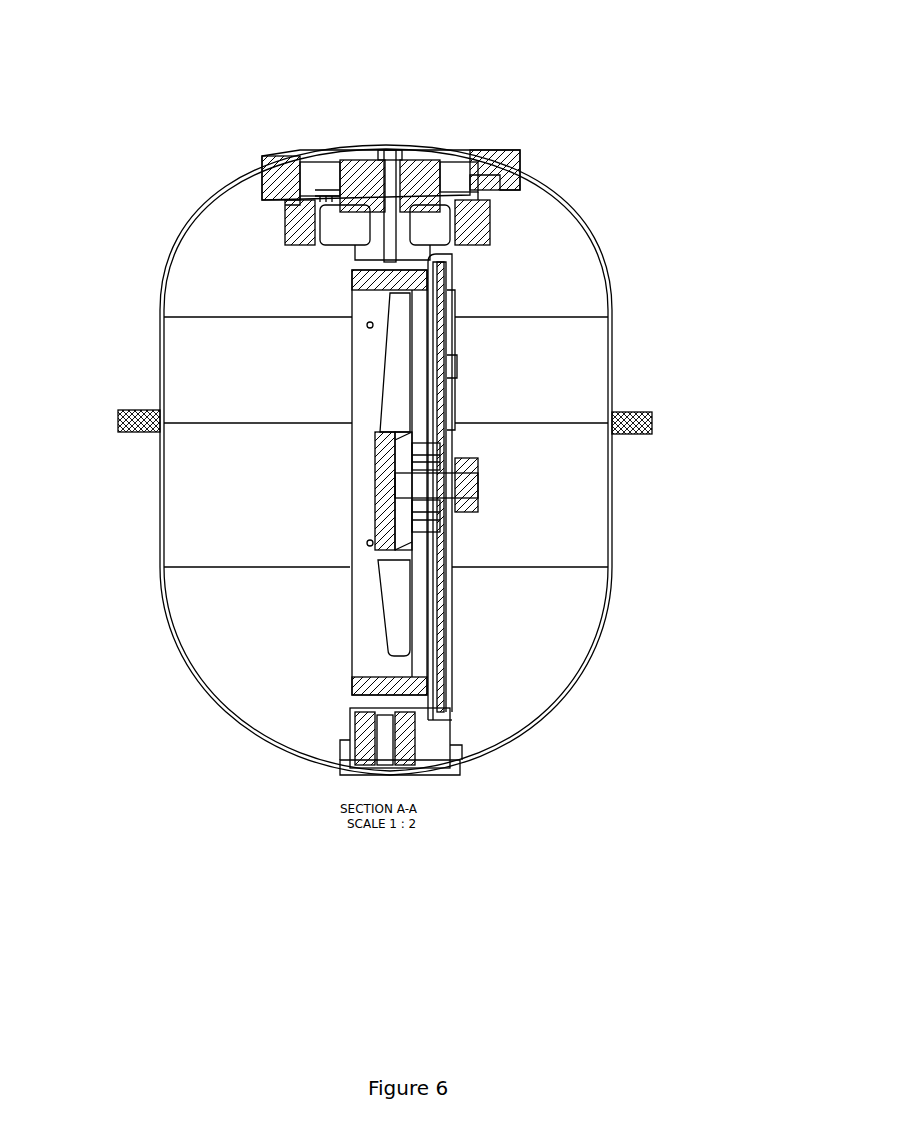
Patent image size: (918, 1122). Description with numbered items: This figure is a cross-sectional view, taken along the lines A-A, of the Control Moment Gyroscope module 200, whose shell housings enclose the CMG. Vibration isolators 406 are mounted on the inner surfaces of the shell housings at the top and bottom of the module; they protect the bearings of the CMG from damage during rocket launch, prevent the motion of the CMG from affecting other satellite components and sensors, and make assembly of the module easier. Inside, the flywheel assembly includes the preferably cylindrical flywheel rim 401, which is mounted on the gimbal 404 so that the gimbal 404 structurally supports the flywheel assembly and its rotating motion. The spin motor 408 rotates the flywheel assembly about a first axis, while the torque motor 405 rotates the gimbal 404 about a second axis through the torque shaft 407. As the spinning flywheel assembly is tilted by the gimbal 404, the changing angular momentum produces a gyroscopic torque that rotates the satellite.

The CMG module 200 is at (632, 277).
The flywheel rim 401 is at (365, 452).
The gimbal 404 is at (395, 385).
The torque motor 405 is at (421, 183).
The vibration isolators 406 is at (265, 172).
The torque shaft 407 is at (390, 192).
The spin motor 408 is at (437, 488).